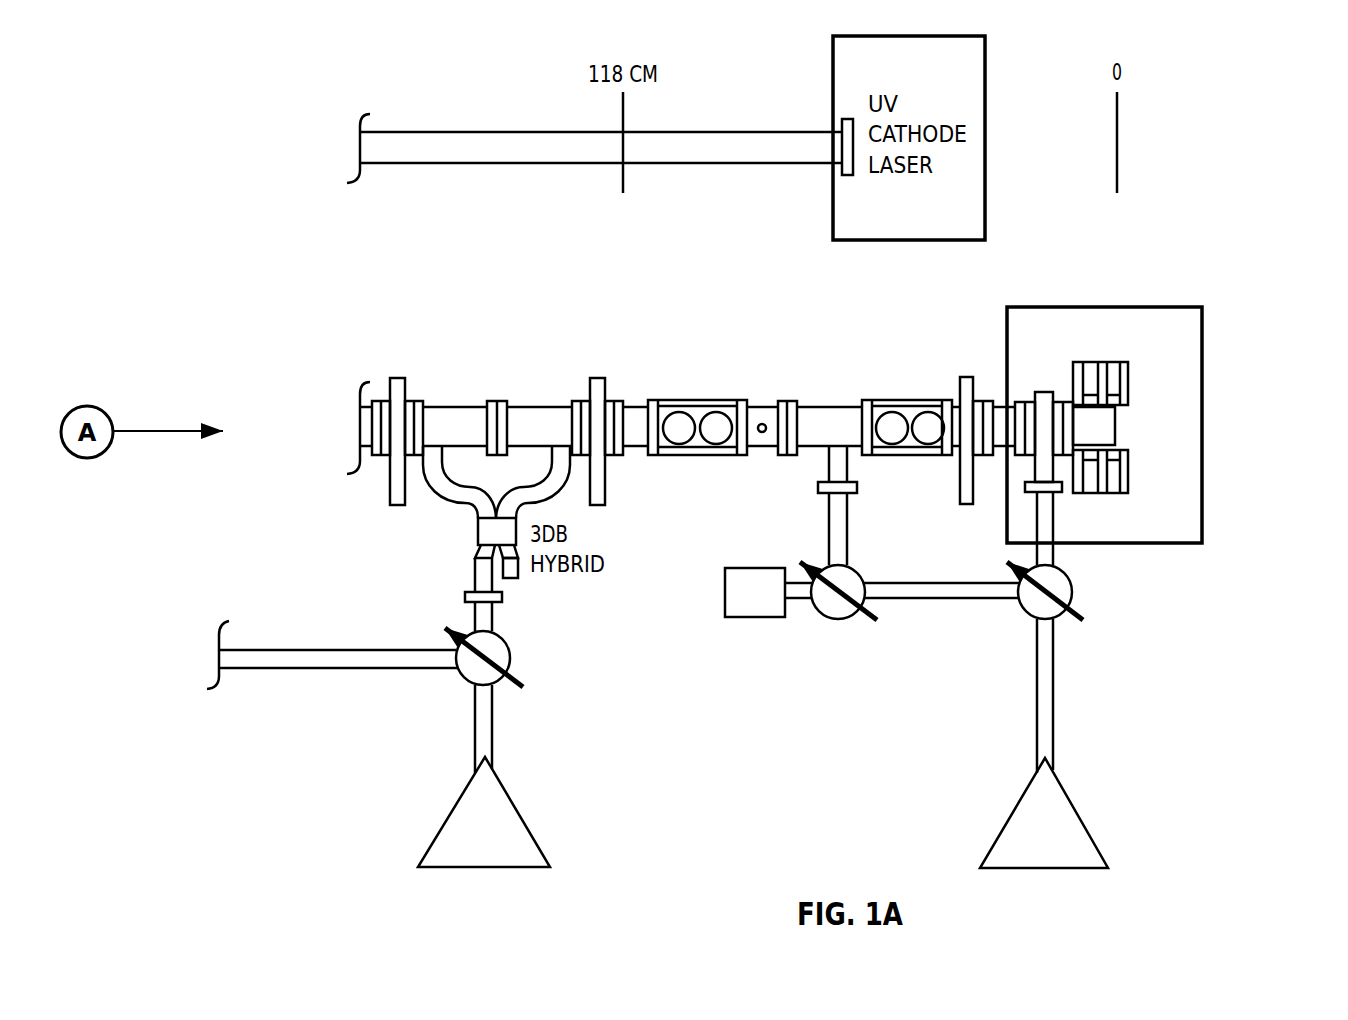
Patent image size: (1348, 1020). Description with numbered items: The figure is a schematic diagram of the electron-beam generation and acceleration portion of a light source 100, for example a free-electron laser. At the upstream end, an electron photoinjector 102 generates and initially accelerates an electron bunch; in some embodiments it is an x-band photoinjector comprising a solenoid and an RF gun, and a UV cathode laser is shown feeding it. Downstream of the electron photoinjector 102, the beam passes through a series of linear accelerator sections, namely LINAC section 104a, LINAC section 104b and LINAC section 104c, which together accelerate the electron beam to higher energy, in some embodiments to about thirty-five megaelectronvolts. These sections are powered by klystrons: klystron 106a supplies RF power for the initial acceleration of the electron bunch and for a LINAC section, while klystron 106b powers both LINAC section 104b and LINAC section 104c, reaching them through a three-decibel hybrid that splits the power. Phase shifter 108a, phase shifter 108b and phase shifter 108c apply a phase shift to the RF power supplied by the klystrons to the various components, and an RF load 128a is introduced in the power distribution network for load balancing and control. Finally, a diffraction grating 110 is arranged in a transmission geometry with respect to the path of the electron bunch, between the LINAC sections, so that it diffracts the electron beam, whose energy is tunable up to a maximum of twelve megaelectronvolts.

The light source 100 is at (1270, 97).
The electron photoinjector 102 is at (1120, 307).
The LINAC section 104a is at (827, 406).
The LINAC section 104b is at (548, 407).
The LINAC section 104c is at (452, 407).
The klystron 106a is at (1013, 807).
The klystron 106b is at (523, 820).
The phase shifter 108a is at (1022, 615).
The phase shifter 108b is at (510, 652).
The phase shifter 108c is at (838, 620).
The diffraction grating 110 is at (712, 412).
The RF load 128a is at (735, 617).